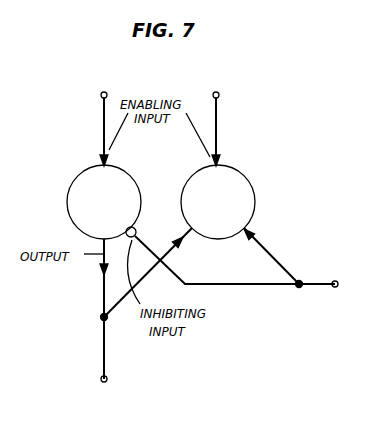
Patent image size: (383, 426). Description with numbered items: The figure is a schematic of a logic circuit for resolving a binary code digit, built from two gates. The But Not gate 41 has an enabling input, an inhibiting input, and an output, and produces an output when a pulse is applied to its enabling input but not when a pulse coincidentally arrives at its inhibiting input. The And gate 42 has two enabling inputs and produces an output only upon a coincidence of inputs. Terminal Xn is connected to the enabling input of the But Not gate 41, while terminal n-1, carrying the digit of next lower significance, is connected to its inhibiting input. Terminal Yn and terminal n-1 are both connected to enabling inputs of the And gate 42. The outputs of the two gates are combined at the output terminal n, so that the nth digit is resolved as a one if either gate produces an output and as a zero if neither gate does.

The But Not gate 41 is at (80, 168).
The And gate 42 is at (250, 181).
The terminal Xn is at (100, 117).
The terminal Yn is at (215, 117).
The nth digit output terminal n is at (103, 321).
The terminal n-1 is at (239, 273).